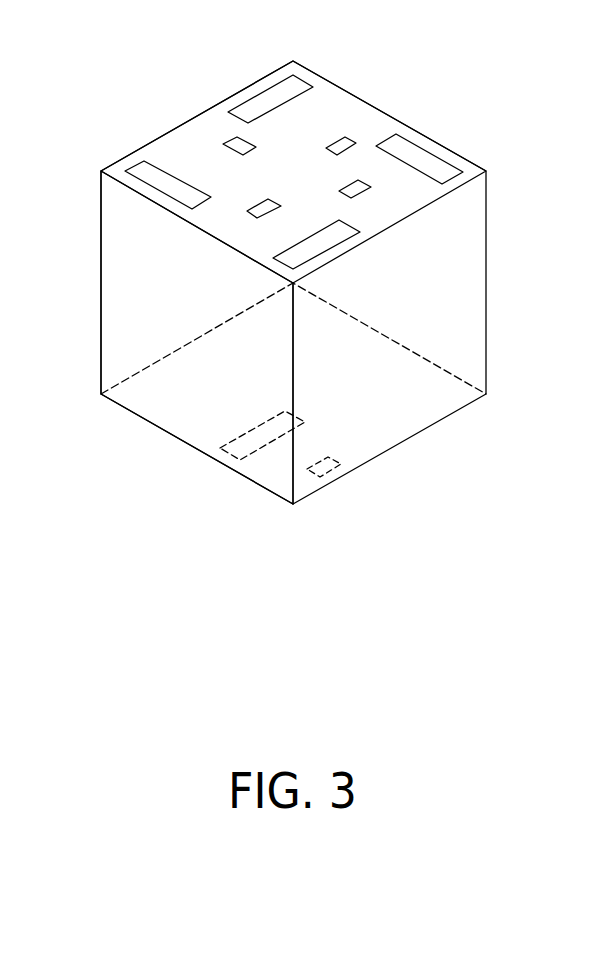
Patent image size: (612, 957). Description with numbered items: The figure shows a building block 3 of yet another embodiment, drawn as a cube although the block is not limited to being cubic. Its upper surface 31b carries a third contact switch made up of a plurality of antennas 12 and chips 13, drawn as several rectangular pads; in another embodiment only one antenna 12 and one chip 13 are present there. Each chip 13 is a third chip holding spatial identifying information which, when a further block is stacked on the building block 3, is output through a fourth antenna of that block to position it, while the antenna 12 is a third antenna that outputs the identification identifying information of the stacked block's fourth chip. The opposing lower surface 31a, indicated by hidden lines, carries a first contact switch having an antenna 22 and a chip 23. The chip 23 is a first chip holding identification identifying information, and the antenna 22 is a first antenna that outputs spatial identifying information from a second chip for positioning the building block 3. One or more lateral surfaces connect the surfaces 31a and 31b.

The building block 3 is at (467, 43).
The antenna 12 is at (270, 96).
The chip 13 is at (233, 145).
The surface 31b is at (173, 147).
The surface 31a is at (165, 432).
The antenna 22 is at (233, 452).
The chip 23 is at (318, 472).